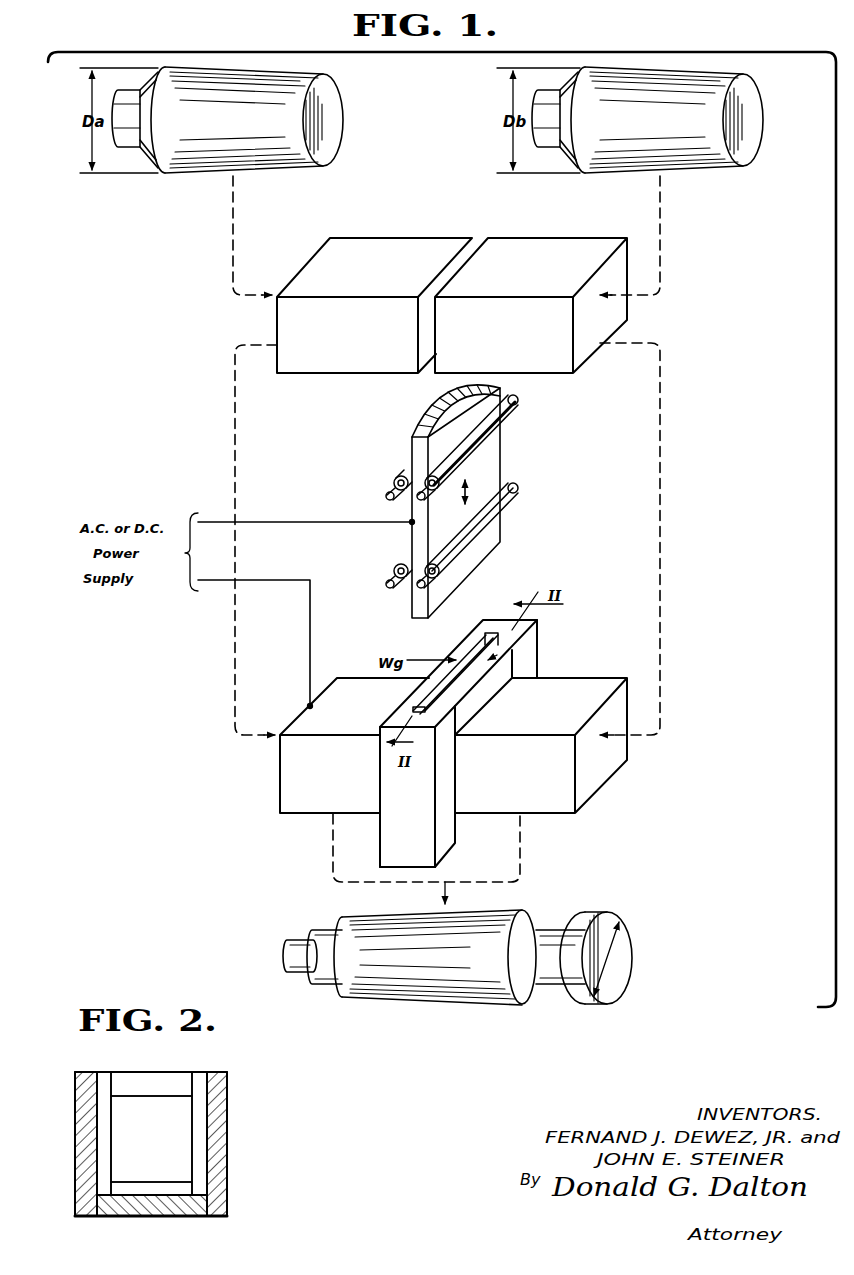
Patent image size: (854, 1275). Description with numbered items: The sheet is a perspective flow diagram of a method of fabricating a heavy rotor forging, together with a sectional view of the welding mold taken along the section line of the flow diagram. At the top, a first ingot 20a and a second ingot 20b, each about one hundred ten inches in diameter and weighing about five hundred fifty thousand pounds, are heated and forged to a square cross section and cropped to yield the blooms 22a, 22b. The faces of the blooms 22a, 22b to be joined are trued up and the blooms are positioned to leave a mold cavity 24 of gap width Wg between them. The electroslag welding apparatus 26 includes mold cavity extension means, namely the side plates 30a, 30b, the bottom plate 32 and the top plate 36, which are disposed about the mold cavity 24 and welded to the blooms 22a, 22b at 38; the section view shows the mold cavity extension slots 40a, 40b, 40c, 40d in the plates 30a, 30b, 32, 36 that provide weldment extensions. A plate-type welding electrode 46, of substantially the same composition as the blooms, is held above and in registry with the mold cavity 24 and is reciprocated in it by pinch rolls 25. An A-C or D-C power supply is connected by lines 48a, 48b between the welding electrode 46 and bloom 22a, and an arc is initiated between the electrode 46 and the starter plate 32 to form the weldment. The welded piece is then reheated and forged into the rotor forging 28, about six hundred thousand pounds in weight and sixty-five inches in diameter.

In FIG. 1, the first ingot 20a is at (336, 119).
In FIG. 1, the second ingot 20b is at (757, 119).
In FIG. 1, the first bloom 22a is at (389, 248).
In FIG. 1, the second bloom 22b is at (546, 248).
In FIG. 1, the mold cavity 24 is at (484, 727).
In FIG. 1, the pinch rolls 25 is at (410, 472).
In FIG. 1, the electroslag welding apparatus 26 is at (489, 501).
In FIG. 1, the heavy forging 28 is at (452, 1002).
In FIG. 1, the first side plate 30a is at (452, 793).
In FIG. 2, the first side plate 30a is at (78, 1146).
In FIG. 1, the second side plate 30b is at (538, 648).
In FIG. 2, the second side plate 30b is at (222, 1143).
In FIG. 1, the bottom plate 32 is at (470, 818).
In FIG. 2, the bottom plate 32 is at (138, 1216).
In FIG. 1, the top plate 36 is at (490, 693).
In FIG. 2, the top plate 36 is at (135, 1076).
In FIG. 1, the weld 38 is at (481, 716).
In FIG. 2, the mold cavity extension slot 40a is at (100, 1103).
In FIG. 2, the mold cavity extension slot 40b is at (200, 1103).
In FIG. 2, the mold cavity extension slot 40c is at (177, 1190).
In FIG. 2, the mold cavity extension slot 40d is at (173, 1078).
In FIG. 1, the welding electrode 46 is at (503, 460).
In FIG. 1, the power supply line 48a is at (252, 580).
In FIG. 1, the power supply line 48b is at (252, 522).